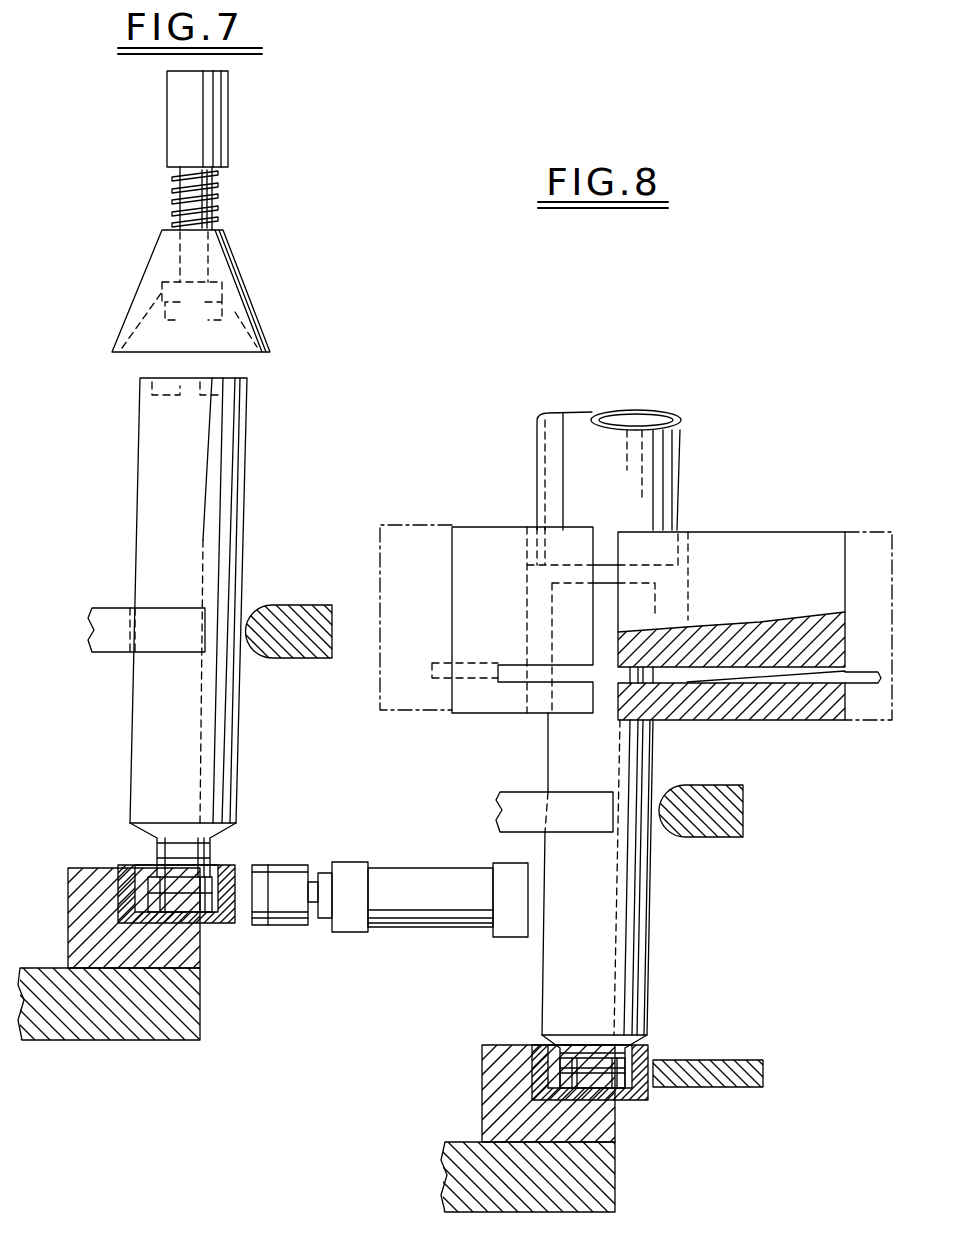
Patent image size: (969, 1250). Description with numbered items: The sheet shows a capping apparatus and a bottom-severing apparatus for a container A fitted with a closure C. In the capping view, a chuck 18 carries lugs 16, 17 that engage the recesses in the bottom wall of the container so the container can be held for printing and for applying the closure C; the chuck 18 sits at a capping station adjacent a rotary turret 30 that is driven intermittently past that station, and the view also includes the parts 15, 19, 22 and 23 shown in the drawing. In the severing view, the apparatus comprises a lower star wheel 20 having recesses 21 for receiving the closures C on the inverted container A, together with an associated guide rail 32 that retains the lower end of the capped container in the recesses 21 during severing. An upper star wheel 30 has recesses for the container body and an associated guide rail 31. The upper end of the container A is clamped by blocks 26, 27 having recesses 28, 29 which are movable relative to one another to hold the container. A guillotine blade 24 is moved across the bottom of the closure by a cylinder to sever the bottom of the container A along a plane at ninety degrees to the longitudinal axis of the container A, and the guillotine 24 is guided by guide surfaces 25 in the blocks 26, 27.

In FIG. 7, the conical plug 15 is at (245, 285).
In FIG. 7, the lug 16 is at (150, 306).
In FIG. 7, the lug 17 is at (237, 313).
In FIG. 7, the chuck 18 is at (232, 212).
In FIG. 7, the cap 19 is at (232, 122).
In FIG. 7, the lower star wheel 20 is at (85, 917).
In FIG. 8, the lower star wheel 20 is at (495, 1103).
In FIG. 7, the recess 21 is at (128, 864).
In FIG. 8, the recess 21 is at (540, 1044).
In FIG. 7, the coupling 22 is at (283, 925).
In FIG. 7, the actuator cylinder 23 is at (420, 918).
In FIG. 8, the guillotine blade 24 is at (862, 690).
In FIG. 8, the guide surface 25 is at (850, 671).
In FIG. 8, the block 26 is at (485, 535).
In FIG. 8, the block 27 is at (772, 540).
In FIG. 8, the recess 28 is at (533, 608).
In FIG. 8, the recess 29 is at (690, 584).
In FIG. 7, the upper star wheel 30 is at (118, 638).
In FIG. 8, the upper star wheel 30 is at (500, 810).
In FIG. 7, the guide rail 31 is at (300, 660).
In FIG. 8, the guide rail 31 is at (712, 828).
In FIG. 8, the guide rail 32 is at (713, 1090).
In FIG. 7, the container A is at (243, 531).
In FIG. 8, the container A is at (653, 941).
In FIG. 7, the closure C is at (236, 870).
In FIG. 8, the closure C is at (650, 1056).